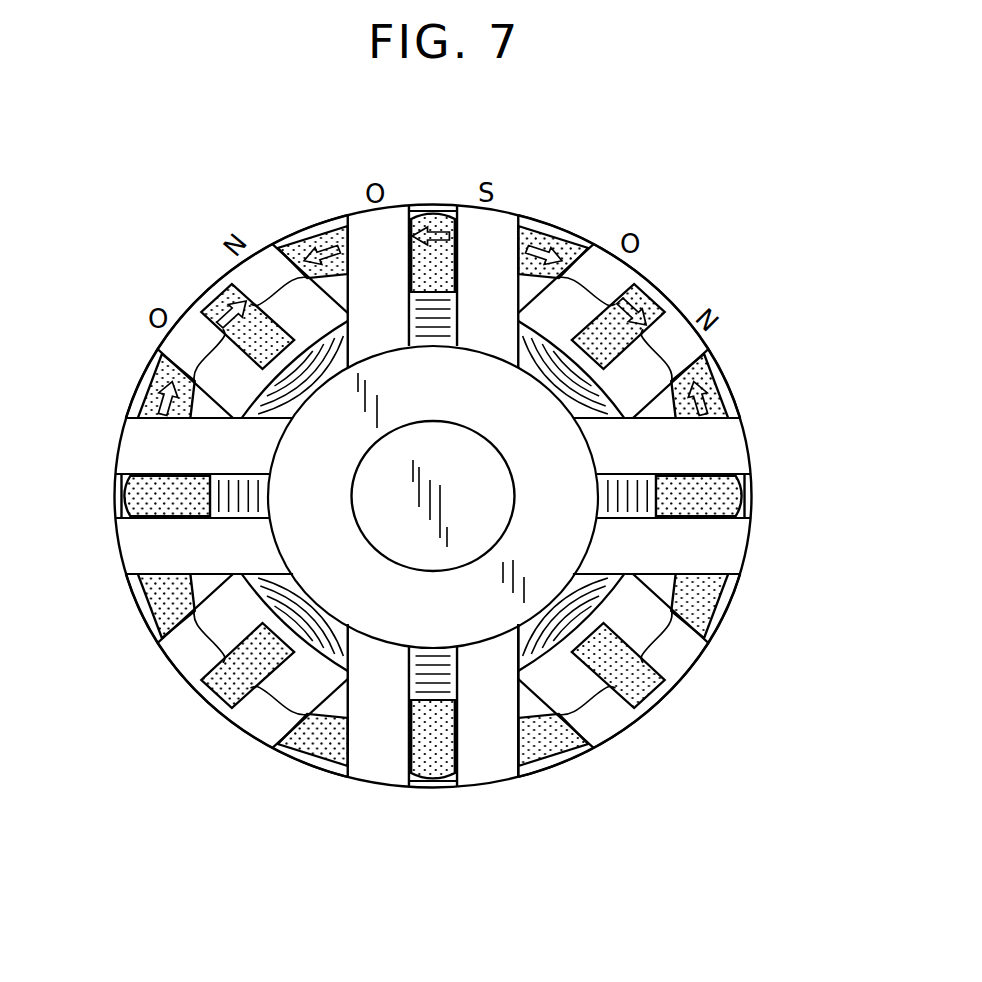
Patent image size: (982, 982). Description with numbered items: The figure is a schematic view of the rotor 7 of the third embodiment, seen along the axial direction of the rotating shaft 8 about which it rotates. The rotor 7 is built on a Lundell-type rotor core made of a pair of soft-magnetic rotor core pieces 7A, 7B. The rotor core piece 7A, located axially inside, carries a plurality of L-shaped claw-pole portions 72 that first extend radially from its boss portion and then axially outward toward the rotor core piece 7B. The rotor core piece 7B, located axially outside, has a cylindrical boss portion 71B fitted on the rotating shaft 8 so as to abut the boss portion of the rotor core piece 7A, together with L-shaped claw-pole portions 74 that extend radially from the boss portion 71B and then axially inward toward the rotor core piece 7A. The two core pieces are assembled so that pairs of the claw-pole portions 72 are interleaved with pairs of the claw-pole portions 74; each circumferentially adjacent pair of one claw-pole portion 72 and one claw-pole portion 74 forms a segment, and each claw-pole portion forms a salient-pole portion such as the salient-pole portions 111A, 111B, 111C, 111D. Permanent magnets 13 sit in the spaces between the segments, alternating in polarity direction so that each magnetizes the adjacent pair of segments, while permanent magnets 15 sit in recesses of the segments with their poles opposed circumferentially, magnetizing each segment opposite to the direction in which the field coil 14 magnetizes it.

The rotor 7 is at (798, 540).
The rotor core piece 7A is at (170, 656).
The rotor core piece 7B is at (130, 553).
The rotating shaft 8 is at (490, 515).
The permanent magnet 13 is at (430, 220).
The field coil 14 is at (573, 627).
The permanent magnet 15 is at (317, 230).
The boss portion 71B is at (583, 457).
The claw-pole portion 72 is at (683, 660).
The claw-pole portion 74 is at (384, 770).
The salient-pole portion 111A is at (257, 278).
The salient-pole portion 111B is at (360, 230).
The salient-pole portion 111C is at (497, 233).
The salient-pole portion 111D is at (597, 257).